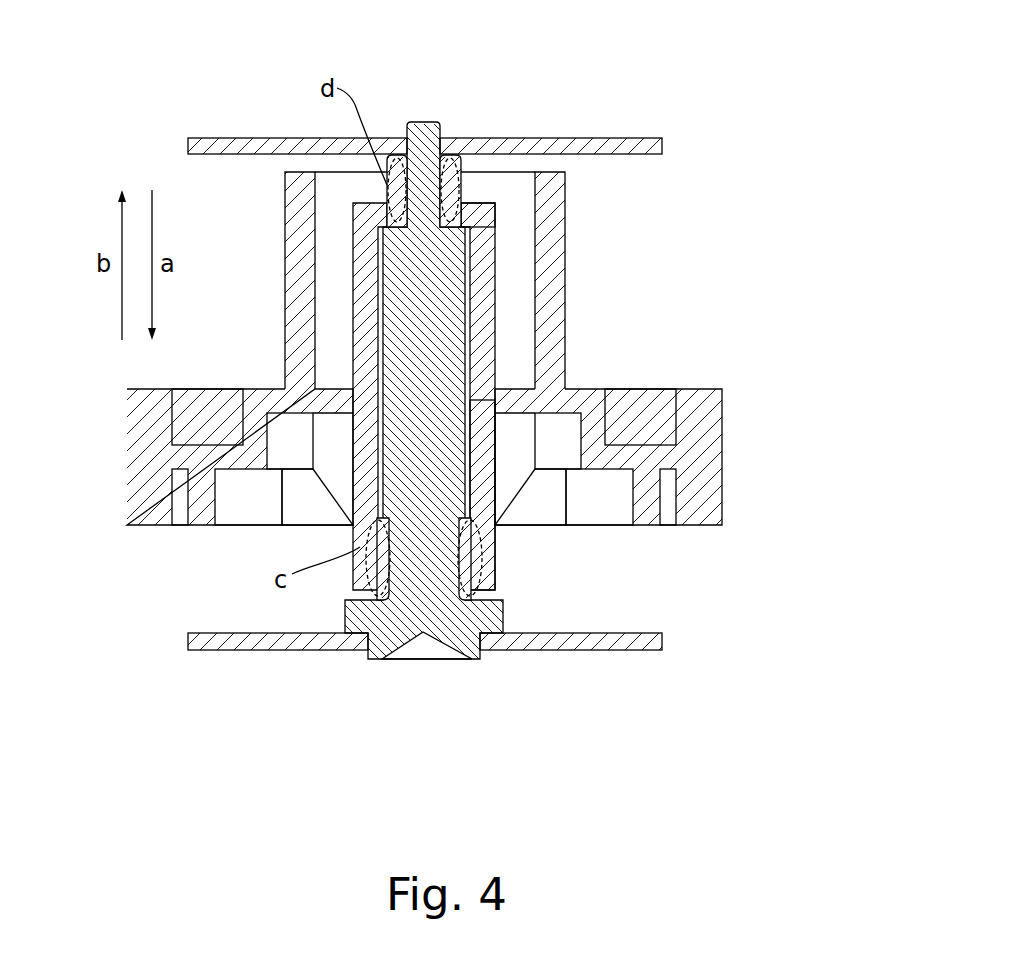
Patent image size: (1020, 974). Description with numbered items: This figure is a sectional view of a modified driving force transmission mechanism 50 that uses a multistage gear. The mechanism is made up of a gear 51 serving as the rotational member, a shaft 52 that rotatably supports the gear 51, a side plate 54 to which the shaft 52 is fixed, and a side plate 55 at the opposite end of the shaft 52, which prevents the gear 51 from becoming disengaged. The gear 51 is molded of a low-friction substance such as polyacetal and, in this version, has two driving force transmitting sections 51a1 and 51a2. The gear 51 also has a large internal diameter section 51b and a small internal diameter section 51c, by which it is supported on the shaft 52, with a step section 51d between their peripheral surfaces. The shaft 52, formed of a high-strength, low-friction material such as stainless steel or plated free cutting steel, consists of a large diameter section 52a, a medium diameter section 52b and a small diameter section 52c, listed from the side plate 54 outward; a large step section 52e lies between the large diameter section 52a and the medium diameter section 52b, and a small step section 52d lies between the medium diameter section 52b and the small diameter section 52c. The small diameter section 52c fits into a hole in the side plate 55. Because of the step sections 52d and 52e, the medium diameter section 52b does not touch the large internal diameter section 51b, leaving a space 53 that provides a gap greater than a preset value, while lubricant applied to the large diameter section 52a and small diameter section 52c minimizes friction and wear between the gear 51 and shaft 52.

The driving force transmission mechanism 50 is at (637, 143).
The gear 51 is at (495, 348).
The driving force transmitting section 51a1 is at (710, 447).
The driving force transmitting section 51a2 is at (558, 237).
The large internal diameter section 51b is at (483, 493).
The small internal diameter section 51c is at (453, 180).
The step section 51d is at (457, 228).
The shaft 52 is at (392, 386).
The large diameter section 52a is at (435, 590).
The medium diameter section 52b is at (403, 333).
The small diameter section 52c is at (432, 122).
The small step section 52d is at (387, 228).
The large step section 52e is at (465, 553).
The space 53 is at (511, 396).
The side plate 54 is at (262, 650).
The side plate 55 is at (240, 140).